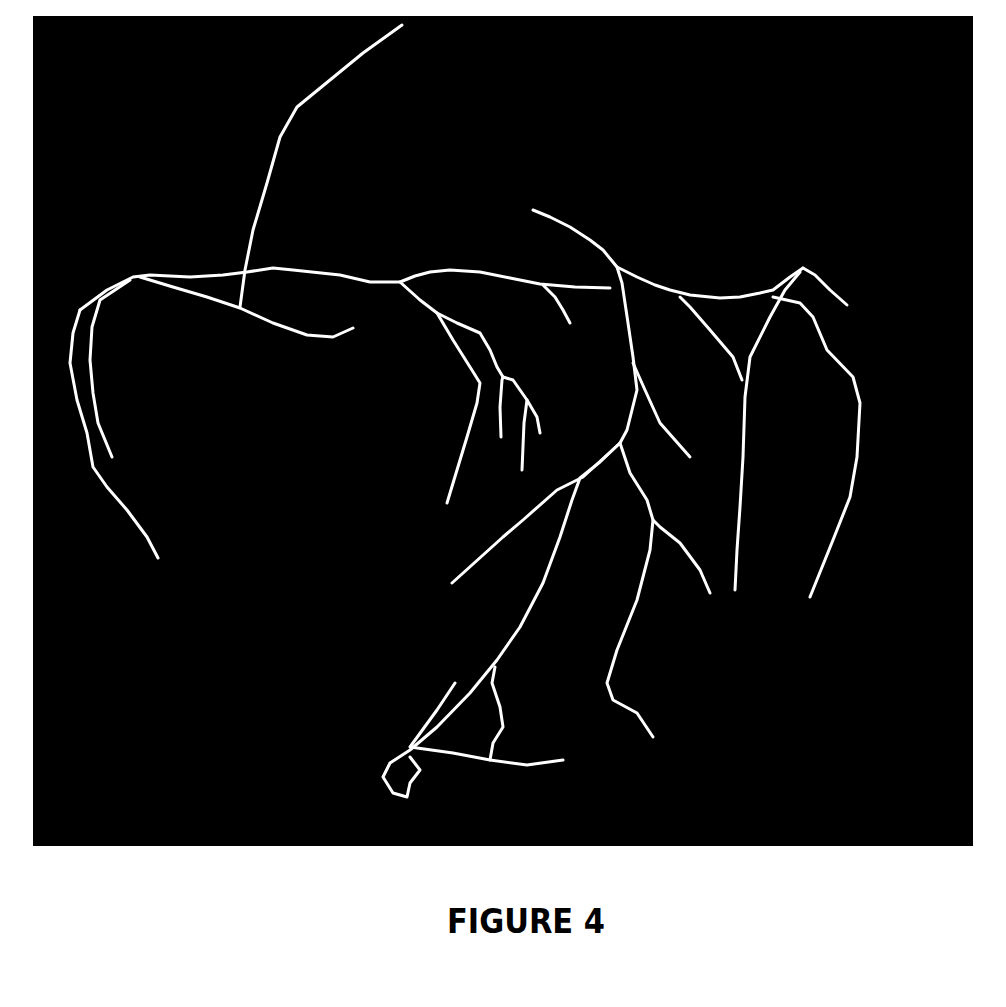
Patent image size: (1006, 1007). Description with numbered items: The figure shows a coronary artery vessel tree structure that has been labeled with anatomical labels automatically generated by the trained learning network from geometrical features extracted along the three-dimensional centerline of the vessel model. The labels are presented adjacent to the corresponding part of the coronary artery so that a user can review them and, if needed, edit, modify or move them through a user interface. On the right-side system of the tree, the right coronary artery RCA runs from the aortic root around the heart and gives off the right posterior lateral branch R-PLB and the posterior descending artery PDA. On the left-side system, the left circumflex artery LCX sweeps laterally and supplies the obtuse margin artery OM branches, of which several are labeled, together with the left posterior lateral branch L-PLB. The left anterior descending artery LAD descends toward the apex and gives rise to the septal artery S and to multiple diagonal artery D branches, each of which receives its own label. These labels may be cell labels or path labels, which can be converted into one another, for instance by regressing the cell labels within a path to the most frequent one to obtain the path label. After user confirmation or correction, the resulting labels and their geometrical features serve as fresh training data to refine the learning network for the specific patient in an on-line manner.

The right coronary artery RCA is at (305, 406).
The right posterior lateral branch R-PLB is at (505, 284).
The posterior descending artery PDA is at (433, 408).
The left circumflex artery LCX is at (668, 254).
The obtuse margin artery OM is at (778, 432).
The left posterior lateral branch L-PLB is at (775, 431).
The left anterior descending artery LAD is at (505, 532).
The septal artery S is at (524, 533).
The diagonal artery D is at (600, 561).